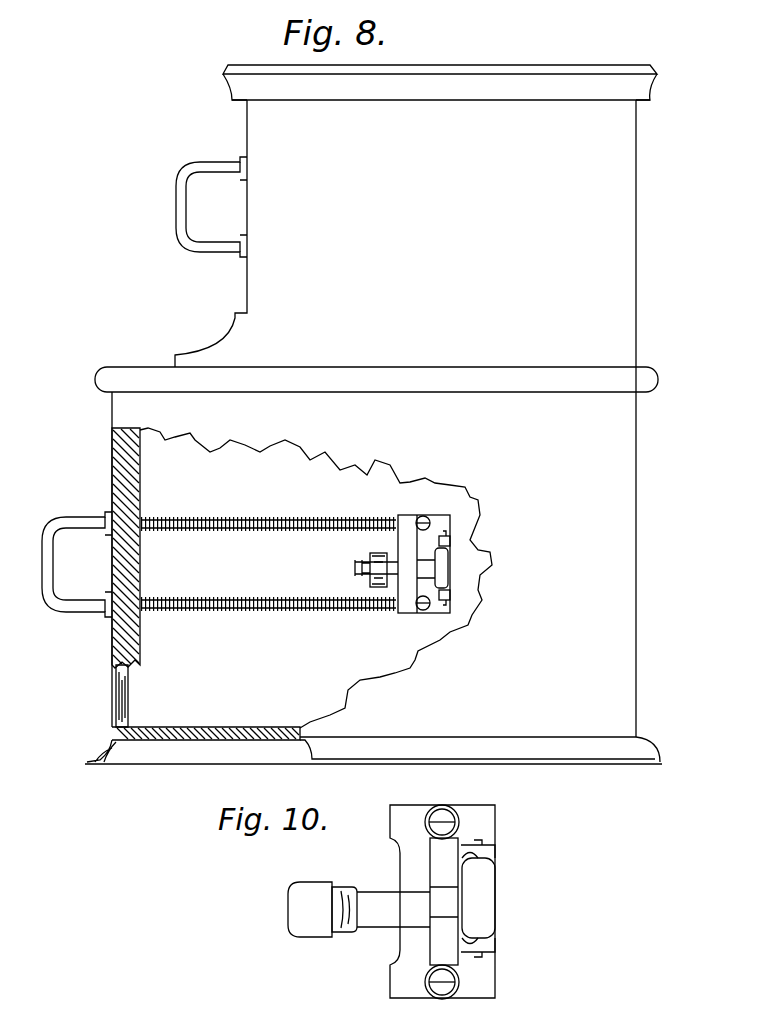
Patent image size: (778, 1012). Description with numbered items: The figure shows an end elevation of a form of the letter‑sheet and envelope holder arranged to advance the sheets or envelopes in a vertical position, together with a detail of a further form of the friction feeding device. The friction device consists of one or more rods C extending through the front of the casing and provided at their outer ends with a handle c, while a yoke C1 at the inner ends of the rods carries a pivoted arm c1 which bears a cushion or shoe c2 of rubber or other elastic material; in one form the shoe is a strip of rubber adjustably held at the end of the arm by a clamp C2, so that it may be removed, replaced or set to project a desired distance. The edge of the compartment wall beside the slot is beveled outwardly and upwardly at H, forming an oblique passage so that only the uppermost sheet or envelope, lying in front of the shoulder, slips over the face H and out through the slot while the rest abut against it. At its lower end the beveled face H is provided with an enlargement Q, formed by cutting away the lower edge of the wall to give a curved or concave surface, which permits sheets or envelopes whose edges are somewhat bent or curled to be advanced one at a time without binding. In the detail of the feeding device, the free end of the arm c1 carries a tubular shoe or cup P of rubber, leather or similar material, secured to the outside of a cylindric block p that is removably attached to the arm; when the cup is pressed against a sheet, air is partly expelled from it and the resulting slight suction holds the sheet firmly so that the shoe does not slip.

In FIG. 8, the handle c is at (62, 560).
In FIG. 8, the rods C is at (258, 517).
In FIG. 8, the yoke C1 is at (424, 564).
In FIG. 10, the yoke C1 is at (413, 870).
In FIG. 8, the pivoted arm c1 is at (449, 575).
In FIG. 10, the pivoted arm c1 is at (488, 907).
In FIG. 8, the clamp C2 is at (372, 560).
In FIG. 8, the cushion or shoe c2 is at (360, 573).
In FIG. 8, the beveled face H is at (114, 680).
In FIG. 8, the enlargement Q is at (130, 713).
In FIG. 10, the tubular shoe or cup P is at (310, 930).
In FIG. 10, the cylindric block p is at (347, 925).